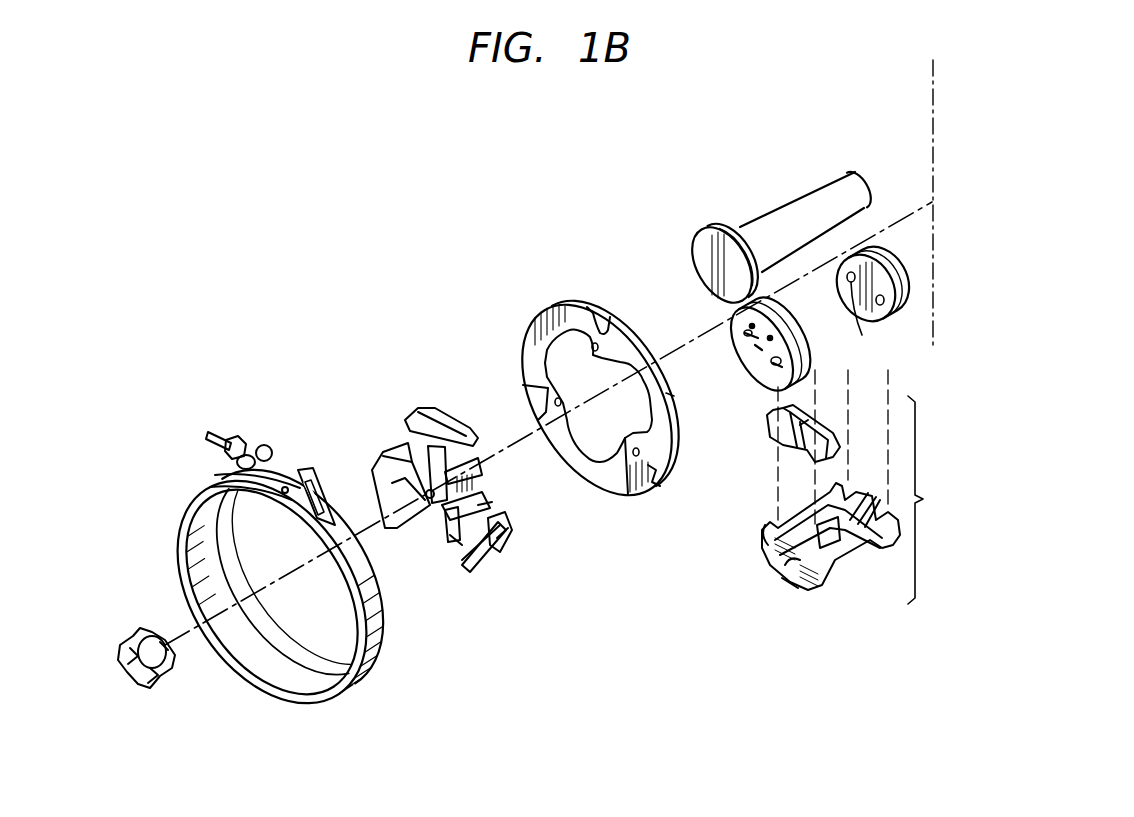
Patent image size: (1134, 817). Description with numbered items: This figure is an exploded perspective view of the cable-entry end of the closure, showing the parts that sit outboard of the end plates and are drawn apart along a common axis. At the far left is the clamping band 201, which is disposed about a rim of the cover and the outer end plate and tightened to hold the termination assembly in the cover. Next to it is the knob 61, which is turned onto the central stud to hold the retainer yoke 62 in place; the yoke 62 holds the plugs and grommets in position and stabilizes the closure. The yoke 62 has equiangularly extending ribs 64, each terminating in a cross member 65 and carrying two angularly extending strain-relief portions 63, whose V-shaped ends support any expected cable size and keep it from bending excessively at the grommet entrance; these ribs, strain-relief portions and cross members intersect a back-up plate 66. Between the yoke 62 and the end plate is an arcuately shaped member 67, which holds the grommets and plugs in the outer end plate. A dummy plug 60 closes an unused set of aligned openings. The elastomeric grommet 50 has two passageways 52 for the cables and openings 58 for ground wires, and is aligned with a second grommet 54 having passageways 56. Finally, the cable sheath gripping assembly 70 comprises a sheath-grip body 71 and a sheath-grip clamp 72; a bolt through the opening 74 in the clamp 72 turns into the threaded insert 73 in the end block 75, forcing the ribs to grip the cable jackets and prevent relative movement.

The clamping band 201 is at (375, 640).
The knob 61 is at (135, 630).
The retainer yoke 62 is at (422, 392).
The strain-relief portion 63 is at (480, 508).
The rib 64 is at (458, 543).
The cross member 65 is at (490, 560).
The back-up plate 66 is at (508, 540).
The arcuately shaped member 67 is at (572, 300).
The dummy plug 60 is at (794, 205).
The grommet 50 is at (790, 318).
The passageway 52 is at (775, 360).
The grommet 54 is at (882, 264).
The passageway 56 is at (858, 303).
The opening 58 is at (745, 333).
The cable sheath gripping assembly 70 is at (817, 494).
The sheath-grip body 71 is at (755, 545).
The sheath-grip clamp 72 is at (762, 450).
The threaded insert 73 is at (785, 566).
The opening 74 is at (802, 426).
The end block 75 is at (790, 582).